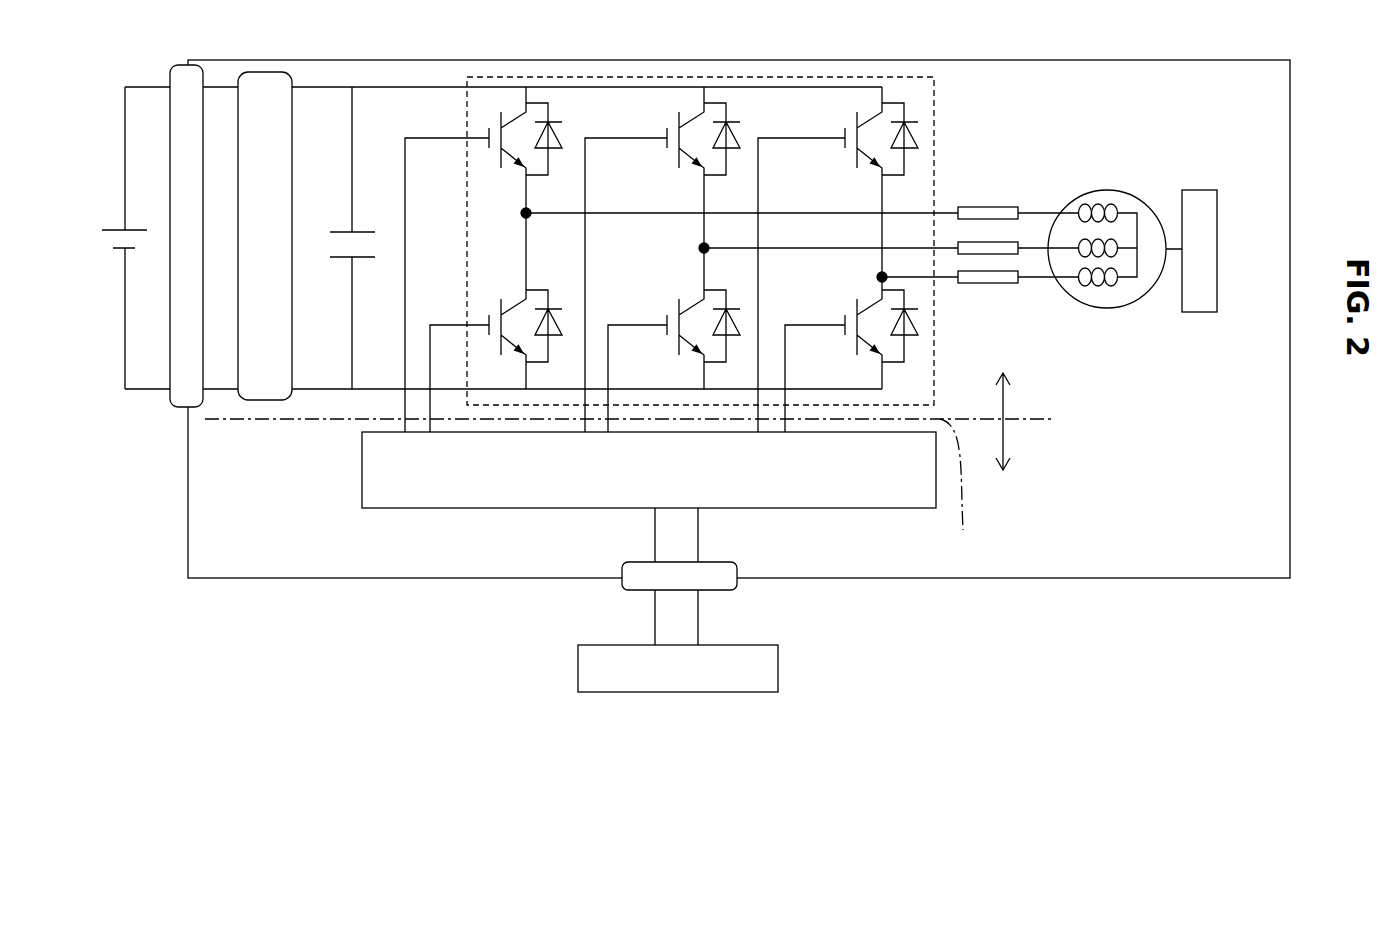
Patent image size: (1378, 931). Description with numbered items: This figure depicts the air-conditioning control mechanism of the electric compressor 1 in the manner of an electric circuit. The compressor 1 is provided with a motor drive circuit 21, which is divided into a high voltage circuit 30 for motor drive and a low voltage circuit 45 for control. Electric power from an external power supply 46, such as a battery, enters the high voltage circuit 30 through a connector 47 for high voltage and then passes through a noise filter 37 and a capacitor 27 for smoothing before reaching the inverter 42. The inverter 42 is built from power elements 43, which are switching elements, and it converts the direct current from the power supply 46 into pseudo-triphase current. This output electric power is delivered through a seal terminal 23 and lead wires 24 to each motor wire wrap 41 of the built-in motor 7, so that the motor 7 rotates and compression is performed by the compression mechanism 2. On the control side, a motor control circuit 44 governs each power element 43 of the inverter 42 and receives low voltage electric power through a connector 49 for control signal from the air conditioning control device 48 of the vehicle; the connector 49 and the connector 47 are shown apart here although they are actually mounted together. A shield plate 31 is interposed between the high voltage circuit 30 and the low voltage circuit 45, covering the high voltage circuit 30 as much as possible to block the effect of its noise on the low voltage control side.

The electric compressor 1 is at (1089, 580).
The compression mechanism 2 is at (1205, 300).
The motor 7 is at (1107, 192).
The motor drive circuit 21 is at (954, 137).
The seal terminal 23 is at (987, 219).
The lead wire 24 is at (1037, 281).
The capacitor for smoothing 27 is at (348, 232).
The high voltage circuit for motor drive 30 is at (1005, 406).
The shield plate 31 is at (630, 488).
The noise filter 37 is at (266, 90).
The motor wire wrap 41 is at (1103, 284).
The inverter 42 is at (598, 77).
The power element 43 is at (905, 352).
The motor control circuit 44 is at (760, 496).
The low voltage circuit for control 45 is at (1006, 443).
The external power supply 46 is at (104, 232).
The connector for high voltage 47 is at (184, 398).
The air conditioning control device 48 is at (760, 667).
The connector for control signal 49 is at (726, 586).